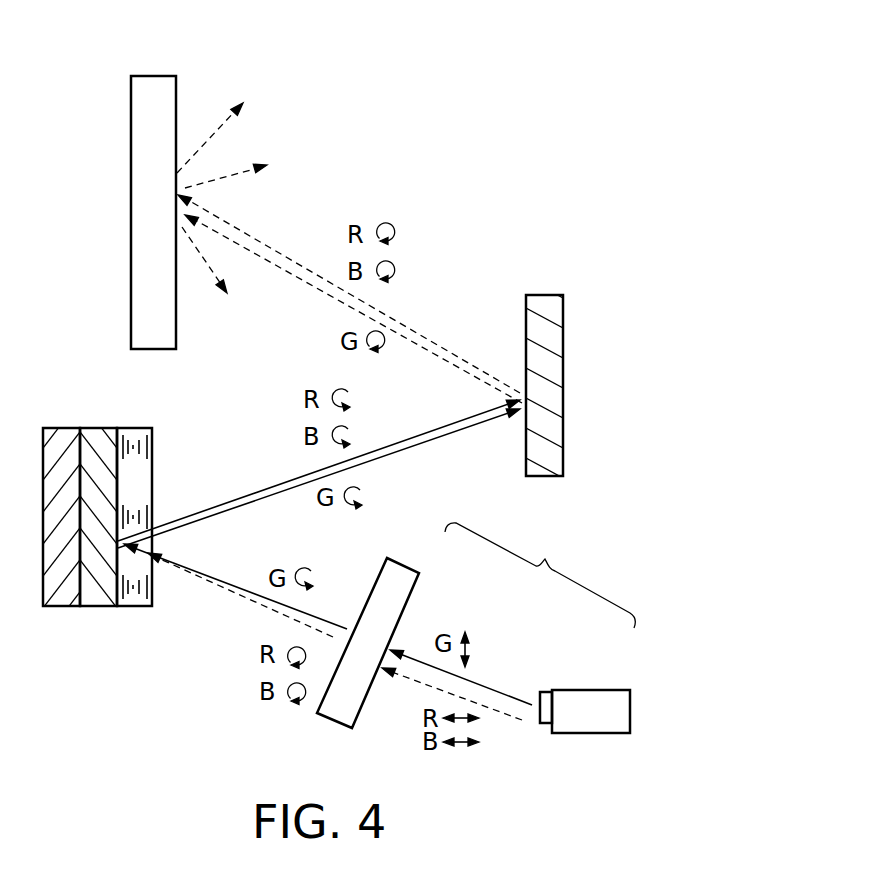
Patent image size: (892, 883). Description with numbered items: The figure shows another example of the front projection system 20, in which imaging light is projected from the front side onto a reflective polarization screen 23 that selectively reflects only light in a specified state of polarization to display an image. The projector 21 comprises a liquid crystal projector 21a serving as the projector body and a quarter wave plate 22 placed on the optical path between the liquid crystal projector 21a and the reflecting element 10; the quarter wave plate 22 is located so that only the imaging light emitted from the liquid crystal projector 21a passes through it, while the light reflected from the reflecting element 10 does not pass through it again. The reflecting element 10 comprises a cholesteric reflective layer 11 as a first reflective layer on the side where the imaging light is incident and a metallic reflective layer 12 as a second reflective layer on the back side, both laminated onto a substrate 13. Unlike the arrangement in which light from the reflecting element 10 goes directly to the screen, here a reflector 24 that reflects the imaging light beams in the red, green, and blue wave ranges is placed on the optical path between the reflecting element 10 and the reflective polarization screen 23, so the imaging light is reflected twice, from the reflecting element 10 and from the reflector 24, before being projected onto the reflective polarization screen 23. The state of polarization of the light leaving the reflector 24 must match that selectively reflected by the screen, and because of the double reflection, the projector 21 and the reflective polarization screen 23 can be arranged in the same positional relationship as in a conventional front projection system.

The reflecting element 10 is at (103, 462).
The cholesteric reflective layer 11 is at (141, 434).
The metallic reflective layer 12 is at (99, 434).
The substrate 13 is at (59, 434).
The projection system 20 is at (392, 152).
The projector 21 is at (540, 628).
The liquid crystal projector 21a is at (582, 698).
The quarter wave plate 22 is at (402, 572).
The reflective polarization screen 23 is at (150, 82).
The reflector 24 is at (540, 302).